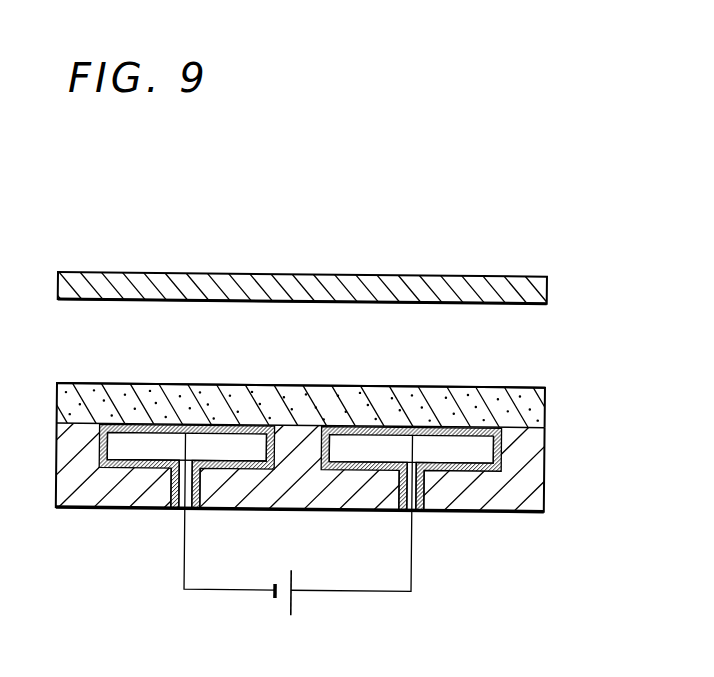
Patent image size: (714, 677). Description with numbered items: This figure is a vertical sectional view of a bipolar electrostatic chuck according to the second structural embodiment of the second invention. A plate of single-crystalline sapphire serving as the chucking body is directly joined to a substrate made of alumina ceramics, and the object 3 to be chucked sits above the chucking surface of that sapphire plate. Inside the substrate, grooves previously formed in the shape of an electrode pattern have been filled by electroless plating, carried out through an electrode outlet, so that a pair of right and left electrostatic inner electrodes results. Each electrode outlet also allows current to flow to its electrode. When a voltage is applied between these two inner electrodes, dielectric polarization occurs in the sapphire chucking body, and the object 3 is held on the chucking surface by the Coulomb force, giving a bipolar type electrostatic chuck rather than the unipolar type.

The object to be chucked 3 is at (421, 277).